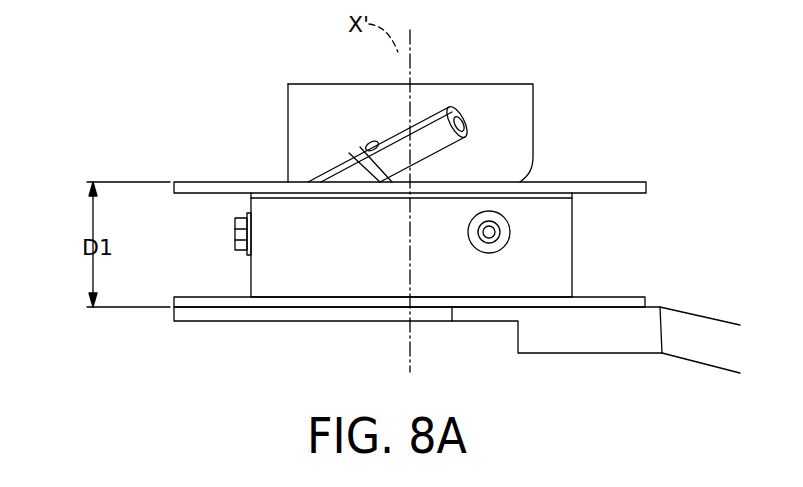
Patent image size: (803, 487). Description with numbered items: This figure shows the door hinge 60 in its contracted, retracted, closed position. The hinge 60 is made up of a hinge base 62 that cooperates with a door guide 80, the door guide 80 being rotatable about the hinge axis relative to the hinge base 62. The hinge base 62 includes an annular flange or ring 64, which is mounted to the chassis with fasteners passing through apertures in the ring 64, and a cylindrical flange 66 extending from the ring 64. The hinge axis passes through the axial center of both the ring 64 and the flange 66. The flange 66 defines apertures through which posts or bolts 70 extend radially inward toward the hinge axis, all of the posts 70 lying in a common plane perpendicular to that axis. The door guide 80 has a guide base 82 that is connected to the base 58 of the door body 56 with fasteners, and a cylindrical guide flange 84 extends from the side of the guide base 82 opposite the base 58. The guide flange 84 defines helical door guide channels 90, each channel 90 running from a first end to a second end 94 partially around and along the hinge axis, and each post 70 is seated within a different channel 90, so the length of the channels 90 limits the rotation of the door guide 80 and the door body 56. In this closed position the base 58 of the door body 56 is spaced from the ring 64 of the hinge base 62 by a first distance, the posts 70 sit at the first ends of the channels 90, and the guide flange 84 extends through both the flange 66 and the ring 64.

The door body 56 is at (700, 336).
The base 58 is at (173, 313).
The hinge 60 is at (190, 149).
The hinge base 62 is at (578, 270).
The ring 64 is at (612, 182).
The cylindrical flange 66 is at (572, 228).
The posts 70 is at (237, 232).
The door guide 80 is at (315, 78).
The guide base 82 is at (636, 297).
The guide flange 84 is at (288, 153).
The door guide channels 90 is at (363, 148).
The second end 94 is at (472, 125).